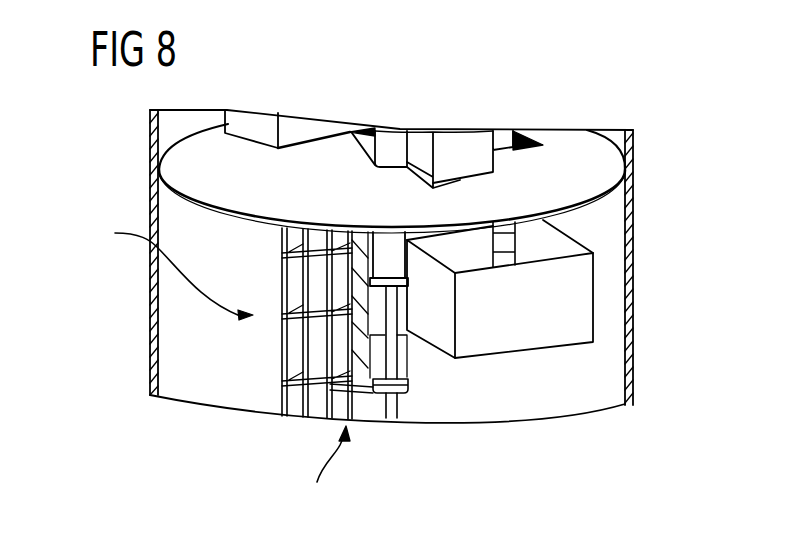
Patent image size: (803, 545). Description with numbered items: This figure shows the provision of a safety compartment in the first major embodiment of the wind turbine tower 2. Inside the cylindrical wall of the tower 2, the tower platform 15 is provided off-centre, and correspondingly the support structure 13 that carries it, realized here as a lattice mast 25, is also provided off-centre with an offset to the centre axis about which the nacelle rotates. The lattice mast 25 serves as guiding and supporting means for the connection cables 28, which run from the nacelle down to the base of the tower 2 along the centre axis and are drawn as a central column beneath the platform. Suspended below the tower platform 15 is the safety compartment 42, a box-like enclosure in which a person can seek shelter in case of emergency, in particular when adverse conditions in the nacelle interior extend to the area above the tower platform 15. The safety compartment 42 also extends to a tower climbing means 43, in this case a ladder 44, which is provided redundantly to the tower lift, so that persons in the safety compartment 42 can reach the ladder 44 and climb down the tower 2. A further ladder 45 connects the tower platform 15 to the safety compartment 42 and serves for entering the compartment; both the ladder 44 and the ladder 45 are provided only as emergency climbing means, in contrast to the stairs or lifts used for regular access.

The tower 2 is at (157, 310).
The support structure 13 is at (171, 269).
The tower platform 15 is at (598, 175).
The lattice mast 25 is at (280, 360).
The connection cables 28 is at (393, 357).
The safety compartment 42 is at (577, 297).
The tower climbing means 43 is at (327, 473).
The ladder 44 is at (367, 395).
The ladder 45 is at (514, 240).